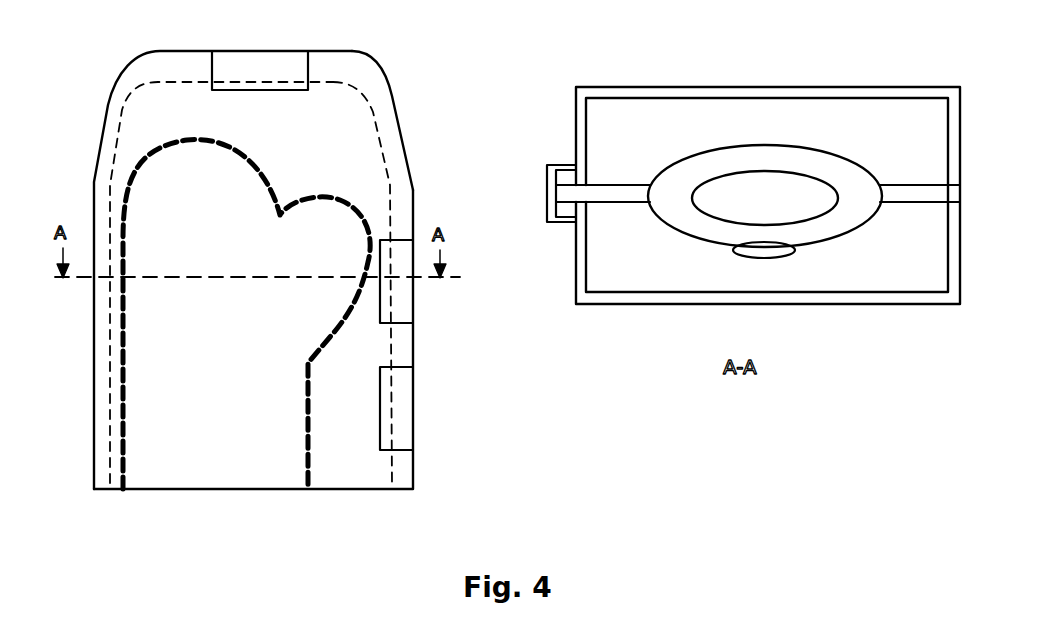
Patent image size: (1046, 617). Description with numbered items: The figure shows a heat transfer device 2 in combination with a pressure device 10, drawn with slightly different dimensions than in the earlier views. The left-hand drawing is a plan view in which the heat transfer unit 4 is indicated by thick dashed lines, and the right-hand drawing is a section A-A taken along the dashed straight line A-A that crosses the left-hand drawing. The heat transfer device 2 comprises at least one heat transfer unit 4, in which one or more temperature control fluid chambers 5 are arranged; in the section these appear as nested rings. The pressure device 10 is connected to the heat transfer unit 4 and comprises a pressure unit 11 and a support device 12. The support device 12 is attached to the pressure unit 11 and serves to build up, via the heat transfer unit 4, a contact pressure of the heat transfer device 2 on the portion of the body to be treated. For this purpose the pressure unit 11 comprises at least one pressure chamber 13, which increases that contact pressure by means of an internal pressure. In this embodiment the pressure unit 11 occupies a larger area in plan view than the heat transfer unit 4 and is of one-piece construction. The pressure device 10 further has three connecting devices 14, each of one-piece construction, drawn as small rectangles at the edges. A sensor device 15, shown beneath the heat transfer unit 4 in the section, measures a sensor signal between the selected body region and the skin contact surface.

The heat transfer device 2 is at (798, 71).
The heat transfer unit 4 is at (330, 189).
The temperature control fluid chamber 5 is at (700, 155).
The pressure device 10 is at (88, 81).
The pressure unit 11 is at (176, 82).
The support device 12 is at (383, 83).
The pressure chamber 13 is at (350, 124).
The connecting device 14 is at (246, 50).
The sensor device 15 is at (744, 252).